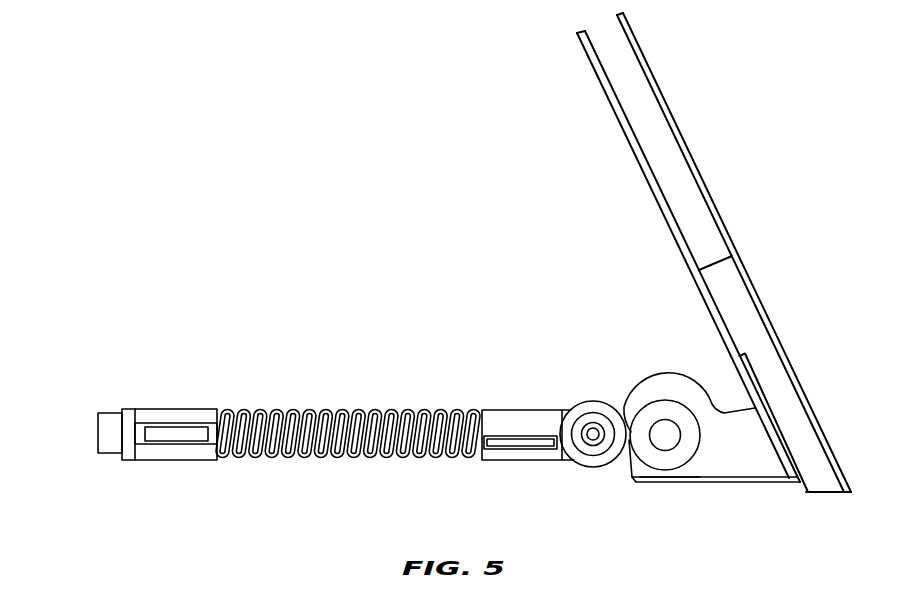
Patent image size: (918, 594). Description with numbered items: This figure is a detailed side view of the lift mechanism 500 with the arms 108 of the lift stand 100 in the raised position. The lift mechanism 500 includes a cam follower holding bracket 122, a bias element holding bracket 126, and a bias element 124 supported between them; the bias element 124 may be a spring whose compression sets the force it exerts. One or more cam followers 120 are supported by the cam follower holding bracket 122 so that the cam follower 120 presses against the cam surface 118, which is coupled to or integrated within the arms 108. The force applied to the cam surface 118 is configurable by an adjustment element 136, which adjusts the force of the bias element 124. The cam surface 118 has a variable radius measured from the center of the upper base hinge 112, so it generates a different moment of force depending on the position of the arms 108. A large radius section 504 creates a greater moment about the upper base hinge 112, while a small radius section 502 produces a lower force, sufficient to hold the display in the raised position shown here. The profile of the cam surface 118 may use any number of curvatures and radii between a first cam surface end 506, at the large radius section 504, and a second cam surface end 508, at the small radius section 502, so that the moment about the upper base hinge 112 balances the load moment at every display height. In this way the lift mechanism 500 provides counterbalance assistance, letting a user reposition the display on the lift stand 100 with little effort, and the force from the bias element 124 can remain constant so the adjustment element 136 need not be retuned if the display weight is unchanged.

The lift stand 100 is at (714, 252).
The arms 108 is at (753, 323).
The upper base hinge 112 is at (666, 436).
The cam surface 118 is at (664, 373).
The cam follower 120 is at (587, 417).
The cam follower holding bracket 122 is at (525, 410).
The bias element 124 is at (322, 409).
The bias element holding bracket 126 is at (168, 409).
The adjustment element 136 is at (98, 436).
The lift mechanism 500 is at (330, 309).
The small radius section 502 is at (630, 463).
The large radius section 504 is at (625, 402).
The first cam surface end 506 is at (632, 382).
The second cam surface end 508 is at (633, 476).